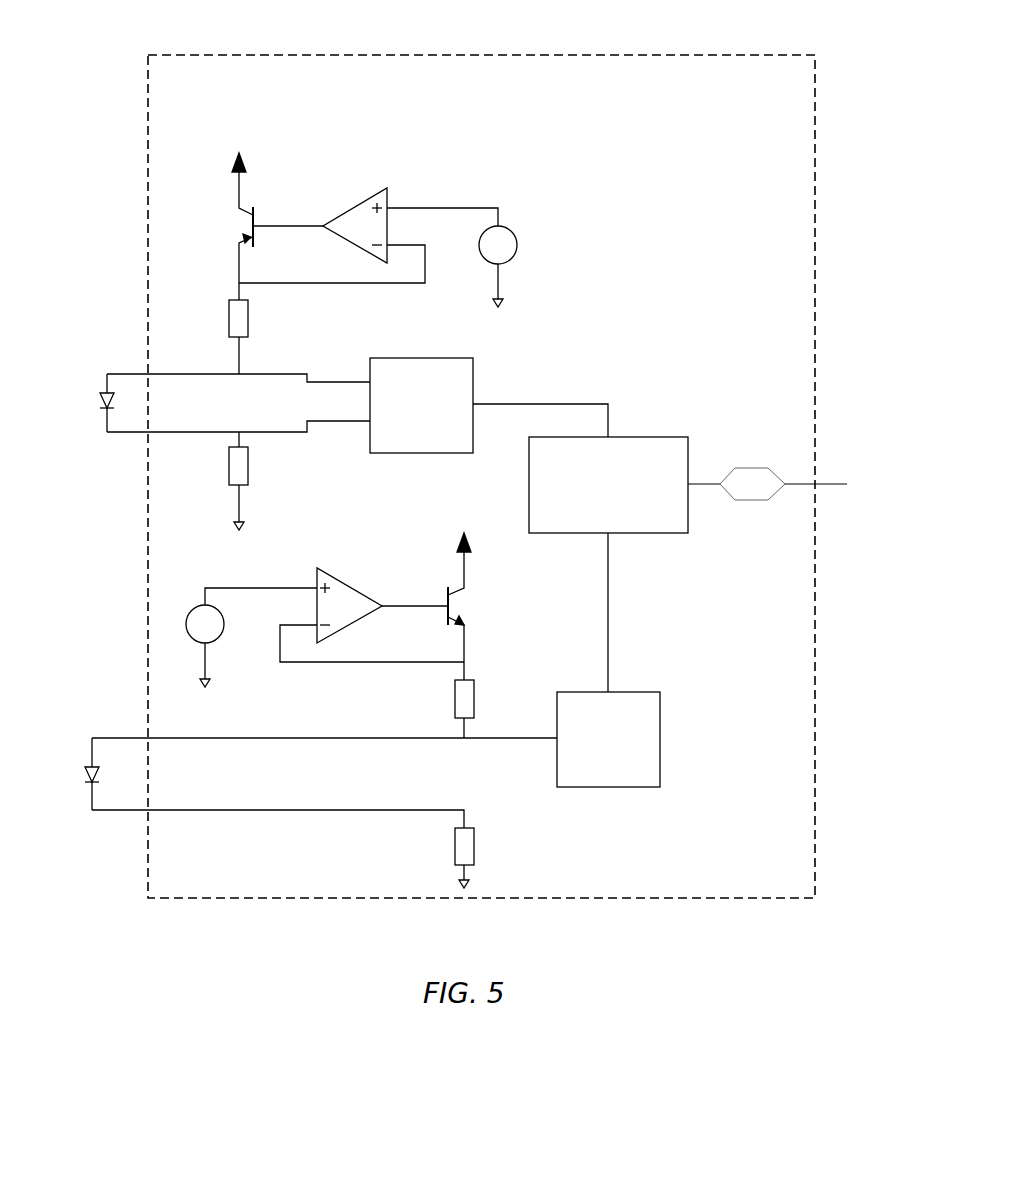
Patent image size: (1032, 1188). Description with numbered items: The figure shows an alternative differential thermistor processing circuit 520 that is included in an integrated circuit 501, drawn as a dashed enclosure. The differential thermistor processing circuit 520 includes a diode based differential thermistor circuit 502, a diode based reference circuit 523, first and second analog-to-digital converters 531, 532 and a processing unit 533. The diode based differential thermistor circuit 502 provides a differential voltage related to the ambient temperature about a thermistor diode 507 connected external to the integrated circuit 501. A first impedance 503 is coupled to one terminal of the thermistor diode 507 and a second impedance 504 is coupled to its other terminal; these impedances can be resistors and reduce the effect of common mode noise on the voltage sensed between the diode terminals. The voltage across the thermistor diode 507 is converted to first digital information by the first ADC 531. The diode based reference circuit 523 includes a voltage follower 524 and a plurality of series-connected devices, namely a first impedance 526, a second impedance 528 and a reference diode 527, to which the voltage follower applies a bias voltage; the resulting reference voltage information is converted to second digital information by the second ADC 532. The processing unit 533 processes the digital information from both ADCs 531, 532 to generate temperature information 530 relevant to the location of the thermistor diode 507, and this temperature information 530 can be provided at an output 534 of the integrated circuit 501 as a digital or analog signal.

The integrated circuit 501 is at (713, 55).
The differential thermistor processing circuit 520 is at (664, 106).
The diode based differential thermistor circuit 502 is at (547, 168).
The first impedance 503 is at (252, 318).
The second impedance 504 is at (250, 468).
The thermistor diode 507 is at (98, 400).
The first analog-to-digital converter 531 is at (475, 388).
The processing unit 533 is at (635, 533).
The temperature information 530 is at (736, 468).
The output 534 is at (829, 465).
The second analog-to-digital converter 532 is at (585, 690).
The voltage follower 524 is at (341, 534).
The first impedance 526 is at (455, 685).
The reference diode 527 is at (80, 770).
The diode based reference circuit 523 is at (268, 840).
The second impedance 528 is at (474, 862).